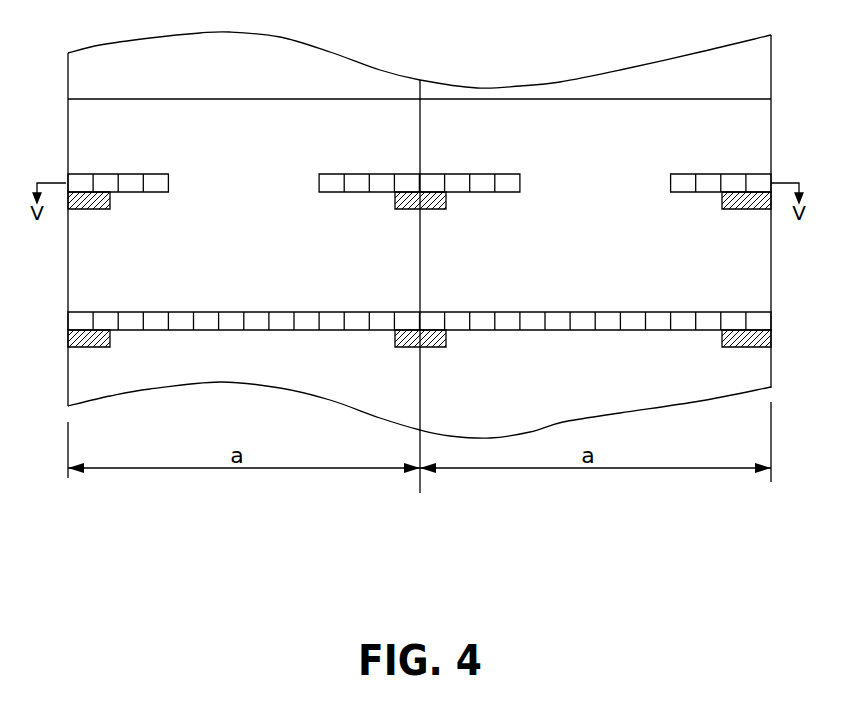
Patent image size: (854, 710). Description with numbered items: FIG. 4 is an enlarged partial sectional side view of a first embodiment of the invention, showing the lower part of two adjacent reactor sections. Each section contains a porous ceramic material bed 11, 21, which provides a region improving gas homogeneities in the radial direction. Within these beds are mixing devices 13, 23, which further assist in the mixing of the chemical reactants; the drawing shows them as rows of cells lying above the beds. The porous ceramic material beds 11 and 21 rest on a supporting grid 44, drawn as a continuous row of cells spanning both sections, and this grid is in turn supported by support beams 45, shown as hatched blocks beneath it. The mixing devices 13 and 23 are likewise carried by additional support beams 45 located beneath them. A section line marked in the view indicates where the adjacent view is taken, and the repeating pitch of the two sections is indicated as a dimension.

The porous ceramic material bed 11 is at (117, 279).
The porous ceramic material bed 21 is at (722, 279).
The mixing device 13 is at (360, 173).
The mixing device 23 is at (715, 173).
The supporting grid 44 is at (80, 323).
The support beams 45 is at (90, 217).